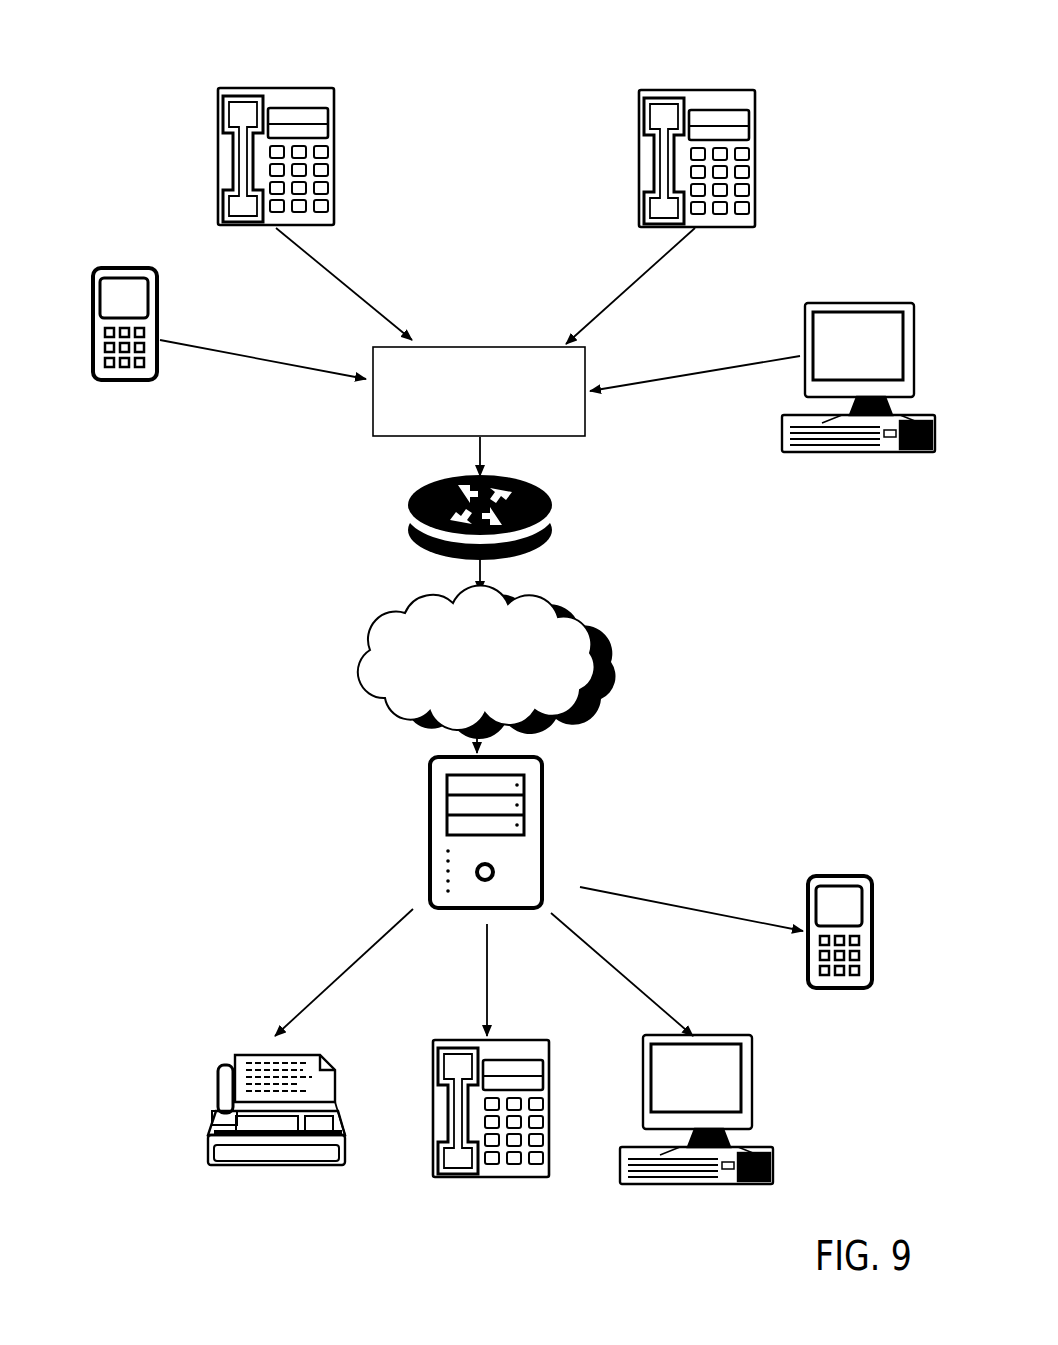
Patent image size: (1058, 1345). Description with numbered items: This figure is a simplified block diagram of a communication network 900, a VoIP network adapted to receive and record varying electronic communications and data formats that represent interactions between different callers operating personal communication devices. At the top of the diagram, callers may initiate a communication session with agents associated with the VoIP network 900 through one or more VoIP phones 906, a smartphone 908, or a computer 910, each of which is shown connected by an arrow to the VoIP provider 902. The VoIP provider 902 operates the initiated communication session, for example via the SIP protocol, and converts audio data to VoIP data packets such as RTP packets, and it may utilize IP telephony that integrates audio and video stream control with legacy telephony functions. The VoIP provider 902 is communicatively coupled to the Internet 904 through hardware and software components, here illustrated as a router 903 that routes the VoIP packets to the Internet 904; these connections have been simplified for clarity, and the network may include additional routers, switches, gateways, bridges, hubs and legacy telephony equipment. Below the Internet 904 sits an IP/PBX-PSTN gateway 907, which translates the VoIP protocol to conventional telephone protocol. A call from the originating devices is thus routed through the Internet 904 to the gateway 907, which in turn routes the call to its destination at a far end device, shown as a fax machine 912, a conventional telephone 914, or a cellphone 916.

The communication network 900 is at (145, 50).
The VoIP provider 902 is at (479, 391).
The router 903 is at (412, 494).
The Internet 904 is at (487, 662).
The VoIP phone 906 is at (218, 135).
The IP/PBX-PSTN gateway 907 is at (405, 842).
The smartphone 908 is at (94, 306).
The computer 910 is at (862, 302).
The fax machine 912 is at (204, 1070).
The conventional telephone 914 is at (431, 1074).
The cellphone 916 is at (823, 876).